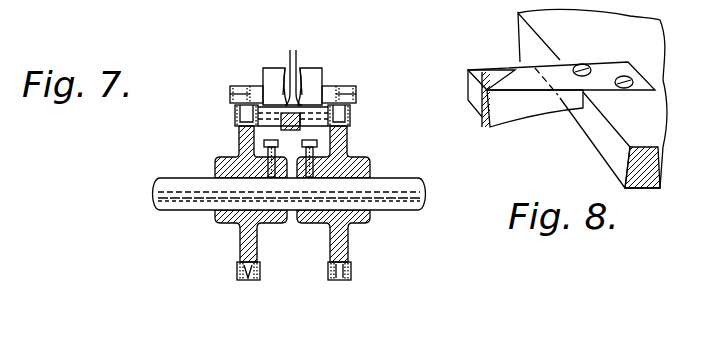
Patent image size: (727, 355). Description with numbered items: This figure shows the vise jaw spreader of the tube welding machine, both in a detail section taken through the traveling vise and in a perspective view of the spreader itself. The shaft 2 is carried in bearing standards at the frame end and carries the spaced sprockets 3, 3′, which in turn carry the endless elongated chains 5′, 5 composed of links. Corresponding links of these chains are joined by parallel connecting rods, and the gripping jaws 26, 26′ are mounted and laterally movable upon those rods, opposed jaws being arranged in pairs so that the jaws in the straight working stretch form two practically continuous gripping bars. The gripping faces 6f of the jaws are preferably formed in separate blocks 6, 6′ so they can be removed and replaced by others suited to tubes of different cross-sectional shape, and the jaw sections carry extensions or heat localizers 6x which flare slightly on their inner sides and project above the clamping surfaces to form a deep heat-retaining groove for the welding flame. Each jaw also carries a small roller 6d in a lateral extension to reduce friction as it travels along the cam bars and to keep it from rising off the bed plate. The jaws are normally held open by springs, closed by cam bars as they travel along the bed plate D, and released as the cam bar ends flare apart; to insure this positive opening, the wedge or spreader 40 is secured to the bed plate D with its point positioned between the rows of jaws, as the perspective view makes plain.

In FIG. 7, the shaft 2 is at (411, 208).
In FIG. 7, the sprocket 3 is at (342, 246).
In FIG. 7, the sprocket 3′ is at (218, 222).
In FIG. 7, the endless chain 5 is at (350, 112).
In FIG. 7, the endless chain 5′ is at (235, 114).
In FIG. 7, the gripping block 6 is at (270, 82).
In FIG. 7, the gripping block 6′ is at (317, 98).
In FIG. 7, the roller 6d is at (370, 70).
In FIG. 7, the gripping face 6f is at (295, 65).
In FIG. 7, the heat localizer extension 6x is at (318, 44).
In FIG. 7, the gripping jaw 26 is at (286, 152).
In FIG. 7, the gripping jaw 26′ is at (311, 115).
In FIG. 7, the wedge or spreader 40 is at (349, 124).
In FIG. 8, the wedge or spreader 40 is at (483, 72).
In FIG. 8, the bed plate D is at (592, 98).